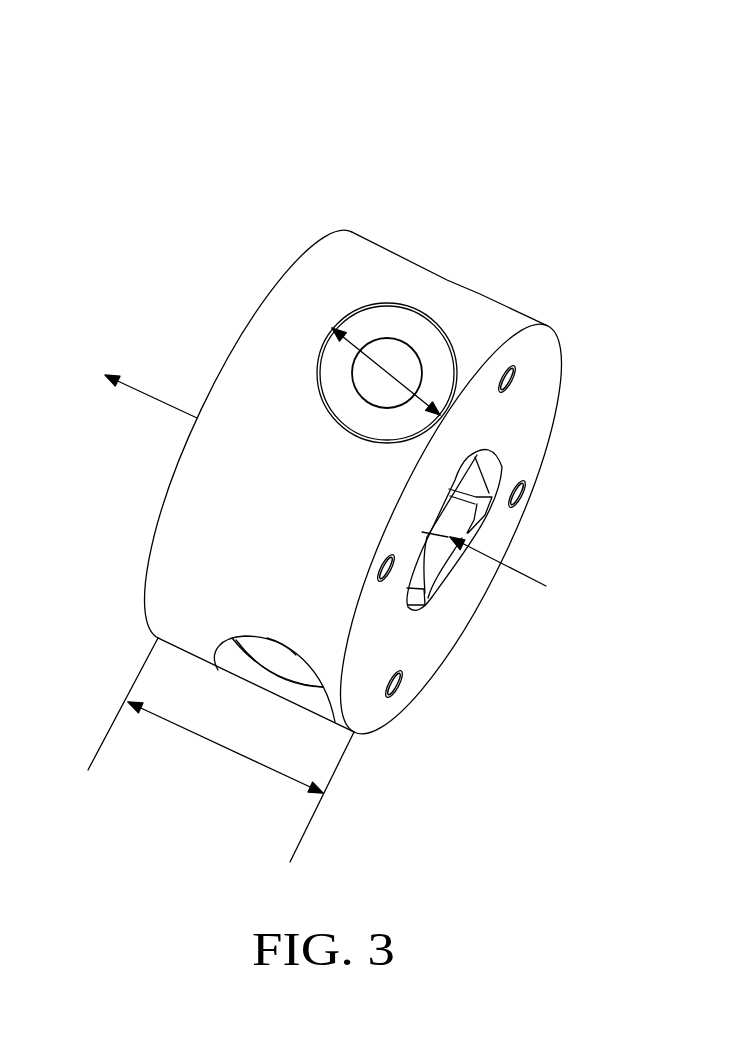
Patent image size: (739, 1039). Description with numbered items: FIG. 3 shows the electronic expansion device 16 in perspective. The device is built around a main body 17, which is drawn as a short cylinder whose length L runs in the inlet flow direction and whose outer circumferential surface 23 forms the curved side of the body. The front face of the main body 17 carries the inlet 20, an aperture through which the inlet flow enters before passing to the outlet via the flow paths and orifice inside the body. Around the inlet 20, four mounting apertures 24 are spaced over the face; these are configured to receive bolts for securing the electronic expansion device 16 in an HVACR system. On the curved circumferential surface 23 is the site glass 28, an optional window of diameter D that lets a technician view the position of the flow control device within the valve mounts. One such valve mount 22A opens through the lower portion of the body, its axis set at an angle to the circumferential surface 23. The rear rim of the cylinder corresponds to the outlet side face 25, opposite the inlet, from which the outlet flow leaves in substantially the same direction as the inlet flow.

The electronic expansion device 16 is at (638, 67).
The main body 17 is at (352, 231).
The inlet 20 is at (457, 588).
The valve mount 22A is at (266, 658).
The circumferential surface 23 is at (170, 537).
The mounting apertures 24 is at (515, 372).
The outlet side face 25 is at (270, 292).
The site glass 28 is at (358, 398).